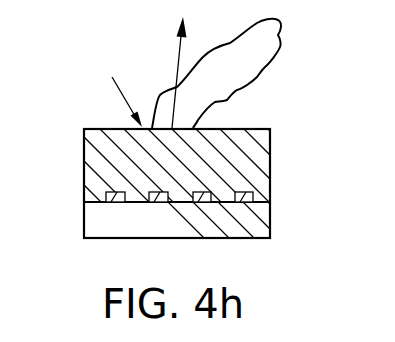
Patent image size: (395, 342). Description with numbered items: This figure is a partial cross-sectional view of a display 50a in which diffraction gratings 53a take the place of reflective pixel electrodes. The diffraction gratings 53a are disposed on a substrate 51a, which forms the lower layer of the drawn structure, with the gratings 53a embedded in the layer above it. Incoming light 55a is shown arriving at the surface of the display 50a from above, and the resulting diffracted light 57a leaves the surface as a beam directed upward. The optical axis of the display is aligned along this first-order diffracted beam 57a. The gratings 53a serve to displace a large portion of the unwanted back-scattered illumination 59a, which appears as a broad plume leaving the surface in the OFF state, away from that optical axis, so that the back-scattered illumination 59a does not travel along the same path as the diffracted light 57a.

The display 50a is at (119, 256).
The substrate 51a is at (257, 222).
The diffraction gratings 53a is at (263, 188).
The incoming light 55a is at (118, 97).
The diffracted light 57a is at (177, 42).
The back-scattered illumination 59a is at (257, 60).